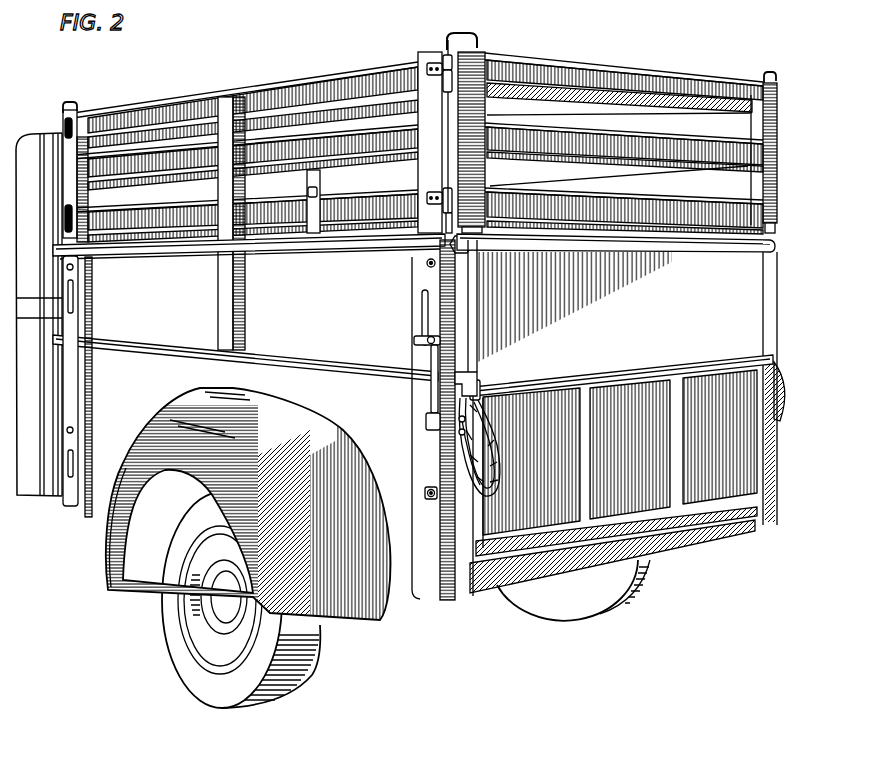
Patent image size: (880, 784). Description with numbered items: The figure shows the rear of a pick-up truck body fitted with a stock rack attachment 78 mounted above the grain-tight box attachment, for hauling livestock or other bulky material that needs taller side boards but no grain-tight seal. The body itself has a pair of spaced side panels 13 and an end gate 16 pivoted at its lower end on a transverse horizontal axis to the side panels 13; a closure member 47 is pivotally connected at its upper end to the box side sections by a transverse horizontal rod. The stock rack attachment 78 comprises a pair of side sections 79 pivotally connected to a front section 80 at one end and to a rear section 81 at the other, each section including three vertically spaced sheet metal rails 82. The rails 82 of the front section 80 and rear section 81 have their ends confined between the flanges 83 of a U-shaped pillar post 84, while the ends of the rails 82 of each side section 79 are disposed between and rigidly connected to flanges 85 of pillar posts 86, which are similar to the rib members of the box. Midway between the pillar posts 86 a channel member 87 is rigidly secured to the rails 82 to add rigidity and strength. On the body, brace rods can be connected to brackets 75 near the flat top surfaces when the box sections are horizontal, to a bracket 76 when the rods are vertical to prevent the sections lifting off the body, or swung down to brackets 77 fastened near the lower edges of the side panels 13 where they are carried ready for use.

The side panel 13 is at (102, 497).
The end gate 16 is at (710, 487).
The closure member 47 is at (740, 327).
The bracket 75 is at (428, 271).
The bracket 76 is at (440, 347).
The bracket 77 is at (431, 489).
The stock rack attachment 78 is at (565, 48).
The side section 79 is at (158, 93).
The front section 80 is at (257, 128).
The rear section 81 is at (607, 63).
The sheet metal rail 82 is at (195, 97).
The flange 83 is at (478, 62).
The U-shaped pillar post 84 is at (473, 208).
The flange 85 is at (99, 134).
The pillar post 86 is at (435, 208).
The channel member 87 is at (223, 100).